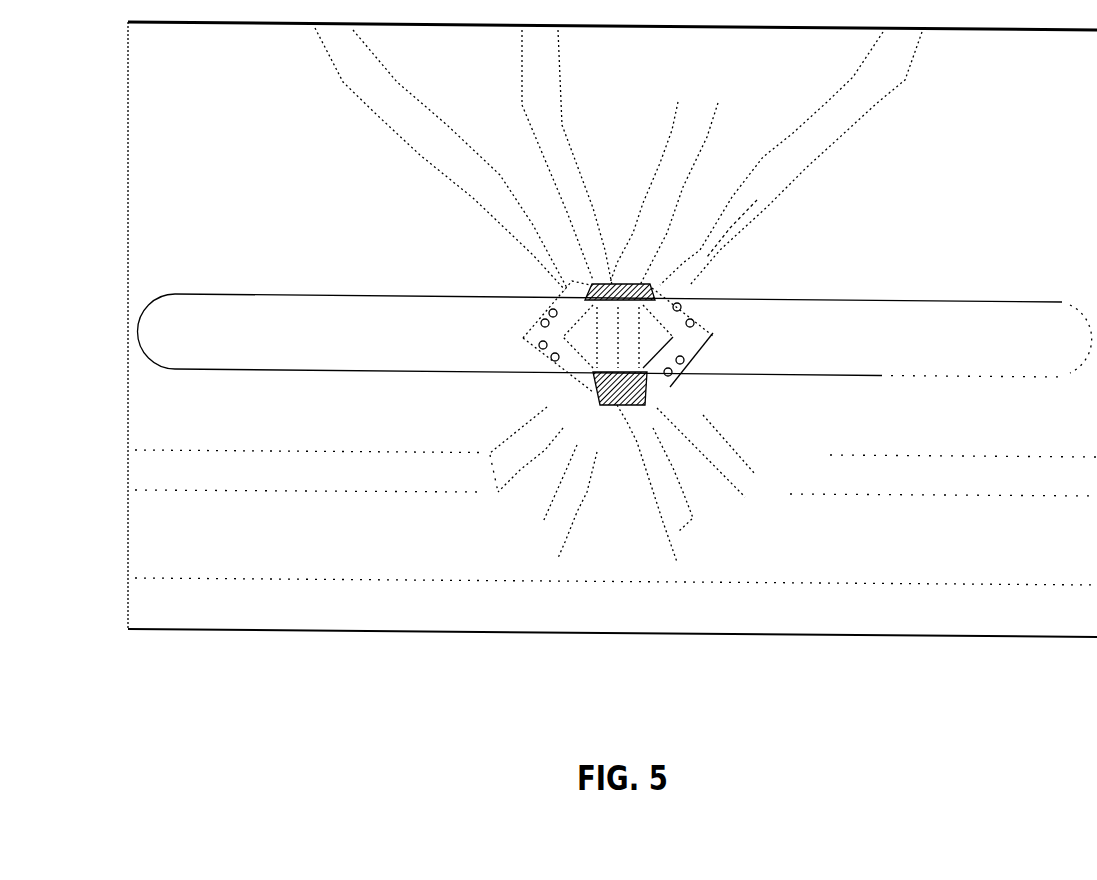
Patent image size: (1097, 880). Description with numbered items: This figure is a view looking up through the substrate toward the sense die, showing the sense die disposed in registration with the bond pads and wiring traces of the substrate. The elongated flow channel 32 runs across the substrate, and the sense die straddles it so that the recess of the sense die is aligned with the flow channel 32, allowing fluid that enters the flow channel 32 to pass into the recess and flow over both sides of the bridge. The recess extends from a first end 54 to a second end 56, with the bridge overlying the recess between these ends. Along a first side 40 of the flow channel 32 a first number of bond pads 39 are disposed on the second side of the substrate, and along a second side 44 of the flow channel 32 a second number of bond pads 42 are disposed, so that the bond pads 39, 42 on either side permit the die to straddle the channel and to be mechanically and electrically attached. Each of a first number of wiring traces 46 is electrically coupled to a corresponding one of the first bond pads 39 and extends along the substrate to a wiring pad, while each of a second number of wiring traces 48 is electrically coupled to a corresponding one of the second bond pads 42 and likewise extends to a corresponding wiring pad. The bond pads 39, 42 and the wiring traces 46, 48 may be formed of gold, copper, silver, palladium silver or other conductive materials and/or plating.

The flow channel 32 is at (615, 340).
The first number of bond pads 39 is at (660, 284).
The first side of the flow channel 40 is at (885, 312).
The second number of bond pads 42 is at (667, 396).
The second side of the flow channel 44 is at (868, 377).
The first number of wiring traces 46 is at (804, 155).
The second number of wiring traces 48 is at (805, 462).
The first end of the recess 54 is at (568, 333).
The second end of the recess 56 is at (673, 338).